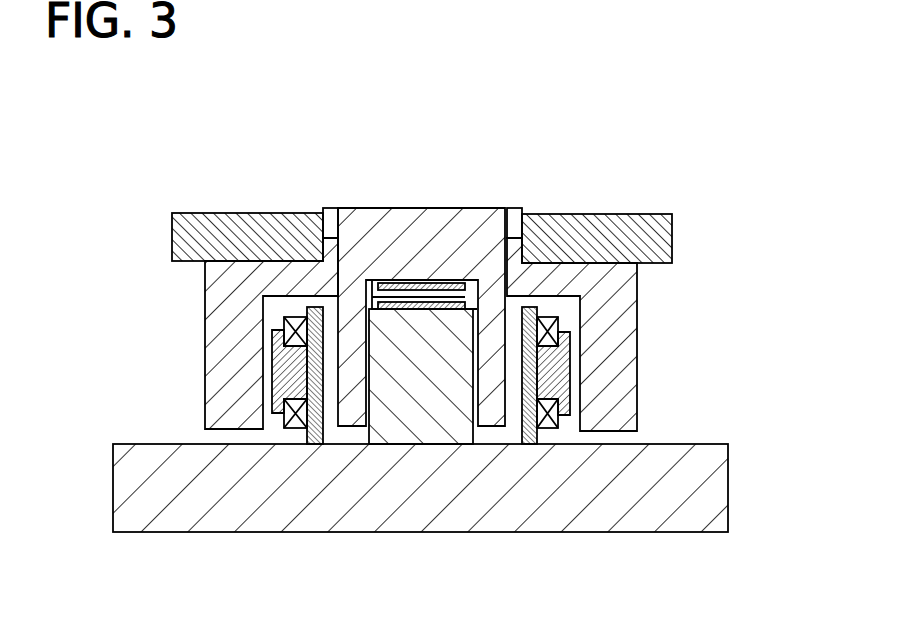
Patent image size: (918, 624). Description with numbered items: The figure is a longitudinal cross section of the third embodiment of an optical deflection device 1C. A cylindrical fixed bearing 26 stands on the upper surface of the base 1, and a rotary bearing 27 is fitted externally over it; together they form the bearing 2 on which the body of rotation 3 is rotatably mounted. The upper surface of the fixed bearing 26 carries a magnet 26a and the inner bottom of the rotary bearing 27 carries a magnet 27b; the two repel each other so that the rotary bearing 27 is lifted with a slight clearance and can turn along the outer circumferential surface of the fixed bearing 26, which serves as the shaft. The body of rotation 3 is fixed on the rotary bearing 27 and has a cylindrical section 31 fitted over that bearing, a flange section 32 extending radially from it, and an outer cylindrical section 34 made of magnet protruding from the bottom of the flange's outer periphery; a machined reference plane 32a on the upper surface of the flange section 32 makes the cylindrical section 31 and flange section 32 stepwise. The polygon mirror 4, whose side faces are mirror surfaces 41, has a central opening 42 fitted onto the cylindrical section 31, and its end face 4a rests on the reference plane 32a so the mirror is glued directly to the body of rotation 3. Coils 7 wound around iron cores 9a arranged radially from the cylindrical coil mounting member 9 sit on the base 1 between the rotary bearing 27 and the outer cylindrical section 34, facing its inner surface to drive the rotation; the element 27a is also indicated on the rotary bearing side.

The base 1 is at (728, 490).
The optical deflection device 1C is at (578, 185).
The bearing 2 is at (298, 339).
The body of rotation 3 is at (659, 323).
The polygon mirror 4 is at (620, 213).
The end face 4a is at (592, 268).
The coil 7 is at (570, 421).
The coil mounting member 9 is at (527, 445).
The iron core 9a is at (570, 373).
The fixed bearing 26 is at (393, 430).
The magnet 26a is at (375, 280).
The rotary bearing 27 is at (490, 208).
The rotor cup skirt 27a is at (338, 399).
The magnet 27b is at (403, 280).
The cylindrical section 31 is at (330, 250).
The flange section 32 is at (205, 302).
The reference plane 32a is at (210, 249).
The outer cylindrical section 34 is at (205, 347).
The mirror surface 41 is at (172, 224).
The opening 42 is at (513, 214).